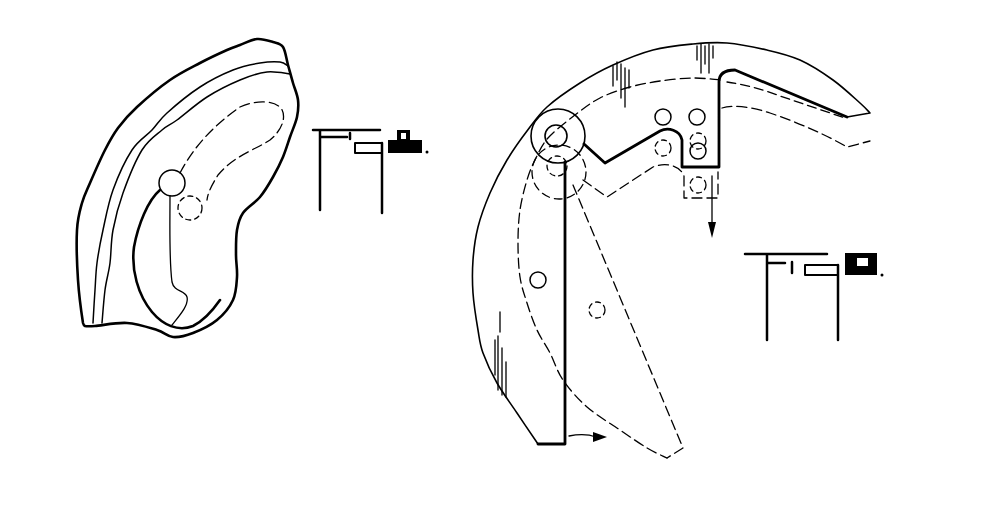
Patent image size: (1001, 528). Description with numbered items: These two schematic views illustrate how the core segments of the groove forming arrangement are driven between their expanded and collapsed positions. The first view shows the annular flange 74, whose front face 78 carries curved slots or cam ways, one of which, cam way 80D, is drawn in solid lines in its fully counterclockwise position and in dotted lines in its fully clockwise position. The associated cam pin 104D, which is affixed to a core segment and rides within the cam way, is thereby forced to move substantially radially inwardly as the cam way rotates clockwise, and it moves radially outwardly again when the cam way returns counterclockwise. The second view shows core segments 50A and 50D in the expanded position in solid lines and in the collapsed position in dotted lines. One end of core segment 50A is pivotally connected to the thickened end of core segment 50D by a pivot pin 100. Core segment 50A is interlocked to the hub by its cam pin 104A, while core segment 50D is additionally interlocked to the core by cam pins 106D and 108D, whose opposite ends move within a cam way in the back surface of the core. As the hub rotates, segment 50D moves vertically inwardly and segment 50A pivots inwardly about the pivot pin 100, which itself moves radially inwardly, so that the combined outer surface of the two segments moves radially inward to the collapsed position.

In FIG. 8, the annular flange 74 is at (167, 128).
In FIG. 8, the front face of annular flange 78 is at (117, 262).
In FIG. 8, the cam way 80D is at (188, 297).
In FIG. 8, the cam pin 104D is at (163, 178).
In FIG. 9, the cam pin 104D is at (662, 108).
In FIG. 9, the core segment 50A is at (509, 153).
In FIG. 9, the core segment 50D is at (810, 70).
In FIG. 9, the pivot pin 100 is at (552, 134).
In FIG. 9, the cam pin 106D is at (705, 118).
In FIG. 9, the cam pin 108D is at (706, 152).
In FIG. 9, the cam pin 104A is at (530, 281).